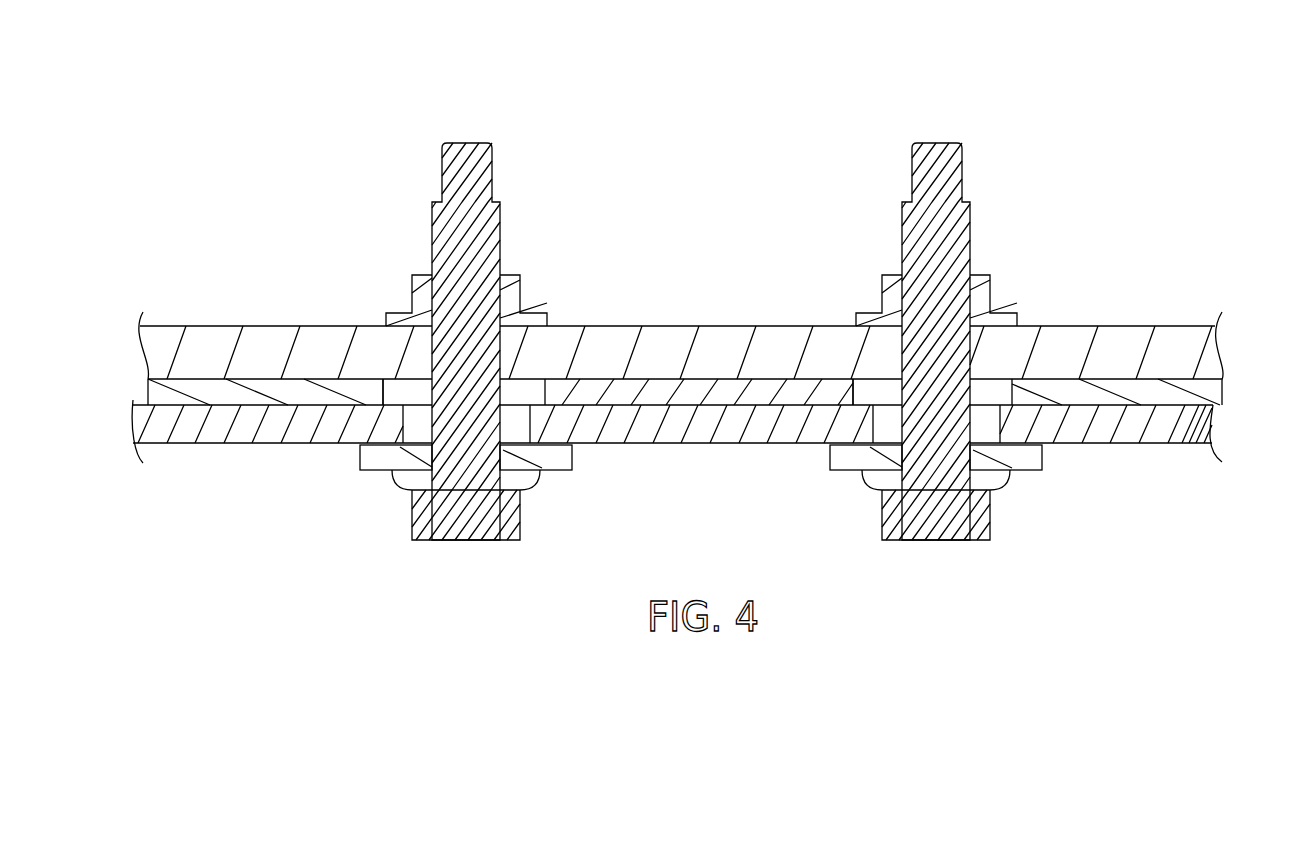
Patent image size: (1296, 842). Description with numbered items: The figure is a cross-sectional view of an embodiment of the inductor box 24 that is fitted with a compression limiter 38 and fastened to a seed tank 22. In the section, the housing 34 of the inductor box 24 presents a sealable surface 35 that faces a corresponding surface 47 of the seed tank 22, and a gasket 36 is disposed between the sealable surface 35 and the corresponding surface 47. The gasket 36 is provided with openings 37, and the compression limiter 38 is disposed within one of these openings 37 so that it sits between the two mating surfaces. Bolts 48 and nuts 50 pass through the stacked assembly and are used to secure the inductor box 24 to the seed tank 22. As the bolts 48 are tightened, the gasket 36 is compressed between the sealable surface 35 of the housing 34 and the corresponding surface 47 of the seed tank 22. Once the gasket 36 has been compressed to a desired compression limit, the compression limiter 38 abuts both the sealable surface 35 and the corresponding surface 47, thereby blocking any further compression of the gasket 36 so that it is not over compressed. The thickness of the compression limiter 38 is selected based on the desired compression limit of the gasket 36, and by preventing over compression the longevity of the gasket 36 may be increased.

The seed tank 22 is at (266, 325).
The inductor box 24 is at (192, 119).
The housing 34 is at (275, 430).
The sealable surface 35 is at (1190, 407).
The gasket 36 is at (165, 394).
The opening 37 is at (853, 393).
The compression limiter 38 is at (590, 390).
The corresponding surface 47 is at (1072, 378).
The bolt 48 is at (463, 518).
The nut 50 is at (413, 297).